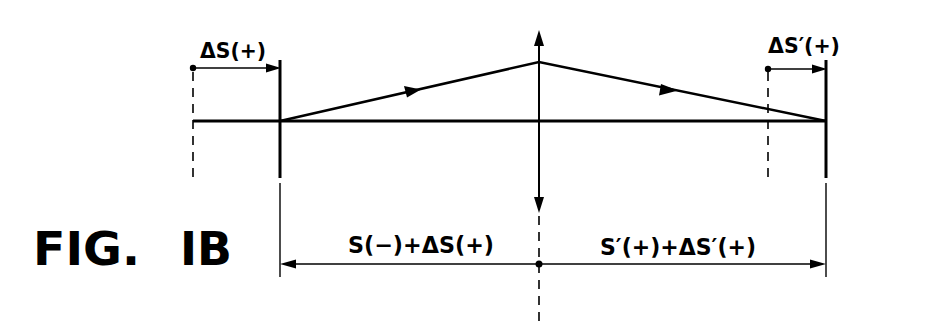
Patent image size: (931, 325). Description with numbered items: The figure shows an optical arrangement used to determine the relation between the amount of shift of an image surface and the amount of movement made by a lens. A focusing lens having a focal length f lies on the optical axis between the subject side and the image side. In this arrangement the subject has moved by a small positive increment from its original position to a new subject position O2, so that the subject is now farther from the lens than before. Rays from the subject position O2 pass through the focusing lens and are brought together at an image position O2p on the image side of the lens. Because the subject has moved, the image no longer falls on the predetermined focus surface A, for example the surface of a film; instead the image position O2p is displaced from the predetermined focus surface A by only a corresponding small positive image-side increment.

The focal length f is at (538, 162).
The subject position O2 is at (262, 168).
The image position O2p is at (850, 168).
The predetermined focus surface A is at (769, 142).